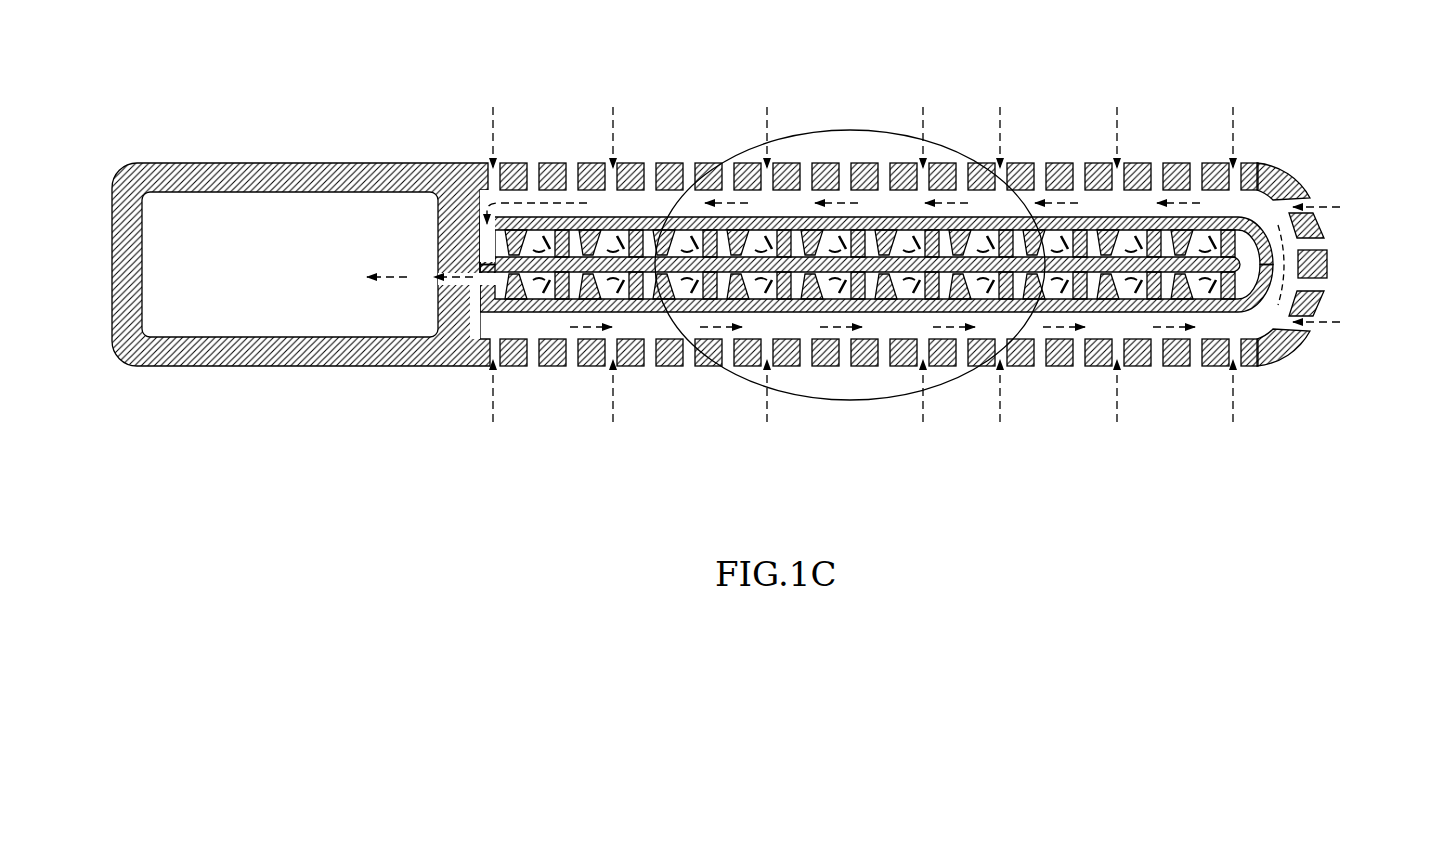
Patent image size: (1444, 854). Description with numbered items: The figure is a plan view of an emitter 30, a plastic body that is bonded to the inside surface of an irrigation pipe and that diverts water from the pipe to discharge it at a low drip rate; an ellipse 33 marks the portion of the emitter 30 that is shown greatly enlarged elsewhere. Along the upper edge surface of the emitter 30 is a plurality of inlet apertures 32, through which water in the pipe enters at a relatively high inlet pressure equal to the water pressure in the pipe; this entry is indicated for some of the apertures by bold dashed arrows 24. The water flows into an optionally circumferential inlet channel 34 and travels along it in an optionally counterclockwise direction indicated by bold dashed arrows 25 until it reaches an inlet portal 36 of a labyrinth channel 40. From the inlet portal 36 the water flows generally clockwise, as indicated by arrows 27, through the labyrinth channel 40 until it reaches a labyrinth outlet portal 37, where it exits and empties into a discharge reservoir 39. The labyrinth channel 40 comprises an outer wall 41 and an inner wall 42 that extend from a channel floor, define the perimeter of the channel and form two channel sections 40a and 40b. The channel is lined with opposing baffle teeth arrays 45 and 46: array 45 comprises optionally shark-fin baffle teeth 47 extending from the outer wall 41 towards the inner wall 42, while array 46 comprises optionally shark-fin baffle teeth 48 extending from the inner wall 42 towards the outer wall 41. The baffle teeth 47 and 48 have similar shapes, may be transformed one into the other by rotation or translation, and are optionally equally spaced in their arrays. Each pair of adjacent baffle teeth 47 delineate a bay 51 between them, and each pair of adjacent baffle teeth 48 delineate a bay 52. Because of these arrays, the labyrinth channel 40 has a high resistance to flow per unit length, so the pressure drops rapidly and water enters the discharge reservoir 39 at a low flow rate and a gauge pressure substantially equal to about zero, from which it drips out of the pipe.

The bold dashed arrows 24 is at (1003, 395).
The bold dashed arrows 25 is at (1055, 333).
The arrows 27 is at (775, 245).
The emitter 30 is at (1185, 103).
The inlet apertures 32 is at (852, 170).
The ellipse 33 is at (852, 403).
The inlet channel 34 is at (1227, 203).
The inlet portal 36 is at (482, 238).
The labyrinth outlet portal 37 is at (440, 278).
The discharge reservoir 39 is at (236, 279).
The labyrinth channel 40 is at (522, 200).
The channel section 40a is at (1243, 237).
The channel section 40b is at (1243, 293).
The outer wall 41 is at (1000, 213).
The inner wall 42 is at (1062, 250).
The baffle teeth array 45 is at (577, 408).
The baffle teeth array 46 is at (766, 81).
The shark-fin baffle teeth 47 is at (628, 302).
The shark-fin baffle teeth 48 is at (657, 240).
The bay 51 is at (700, 300).
The bay 52 is at (658, 230).